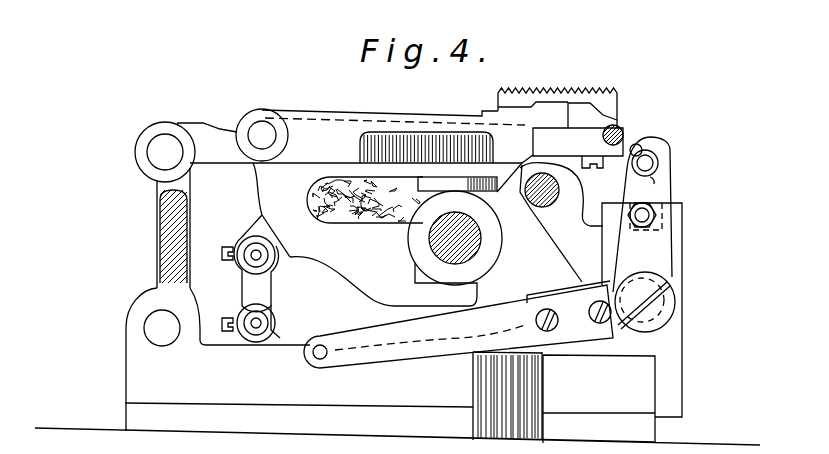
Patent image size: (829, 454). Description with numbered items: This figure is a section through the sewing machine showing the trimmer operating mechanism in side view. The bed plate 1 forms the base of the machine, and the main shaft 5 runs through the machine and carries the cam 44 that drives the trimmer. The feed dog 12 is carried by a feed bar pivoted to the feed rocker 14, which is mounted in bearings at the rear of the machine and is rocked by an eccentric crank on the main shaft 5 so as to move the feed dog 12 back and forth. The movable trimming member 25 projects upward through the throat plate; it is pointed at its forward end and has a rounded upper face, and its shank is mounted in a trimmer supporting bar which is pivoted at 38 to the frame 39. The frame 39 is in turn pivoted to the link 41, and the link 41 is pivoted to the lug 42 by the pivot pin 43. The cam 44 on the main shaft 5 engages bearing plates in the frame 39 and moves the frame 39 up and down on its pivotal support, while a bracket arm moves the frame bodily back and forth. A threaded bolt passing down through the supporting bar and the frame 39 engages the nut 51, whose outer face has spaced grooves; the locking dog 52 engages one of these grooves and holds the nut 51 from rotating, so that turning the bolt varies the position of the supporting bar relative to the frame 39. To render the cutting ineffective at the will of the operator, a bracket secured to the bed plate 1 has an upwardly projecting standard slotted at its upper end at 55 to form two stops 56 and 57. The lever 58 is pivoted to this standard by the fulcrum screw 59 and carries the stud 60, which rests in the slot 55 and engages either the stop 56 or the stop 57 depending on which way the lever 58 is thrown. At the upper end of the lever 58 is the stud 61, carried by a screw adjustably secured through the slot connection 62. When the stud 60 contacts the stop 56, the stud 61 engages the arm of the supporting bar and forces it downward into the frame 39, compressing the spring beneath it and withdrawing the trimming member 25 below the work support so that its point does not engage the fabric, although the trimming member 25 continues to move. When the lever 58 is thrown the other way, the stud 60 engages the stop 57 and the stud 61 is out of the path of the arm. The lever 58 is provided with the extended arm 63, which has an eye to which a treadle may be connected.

The bed plate 1 is at (600, 402).
The main shaft 5 is at (467, 254).
The feed dog 12 is at (545, 78).
The feed rocker 14 is at (162, 158).
The movable trimming member 25 is at (577, 103).
The pivot 38 is at (261, 133).
The frame 39 is at (397, 277).
The link 41 is at (258, 285).
The lug 42 is at (280, 338).
The pivot pin 43 is at (258, 323).
The cam 44 is at (497, 243).
The nut 51 is at (488, 193).
The locking dog 52 is at (462, 183).
The slot 55 is at (678, 193).
The stop 56 is at (612, 216).
The stop 57 is at (678, 215).
The lever 58 is at (647, 250).
The fulcrum screw 59 is at (656, 313).
The stud 60 is at (650, 205).
The stud 61 is at (656, 160).
The slot connection 62 is at (648, 151).
The extended arm 63 is at (385, 352).